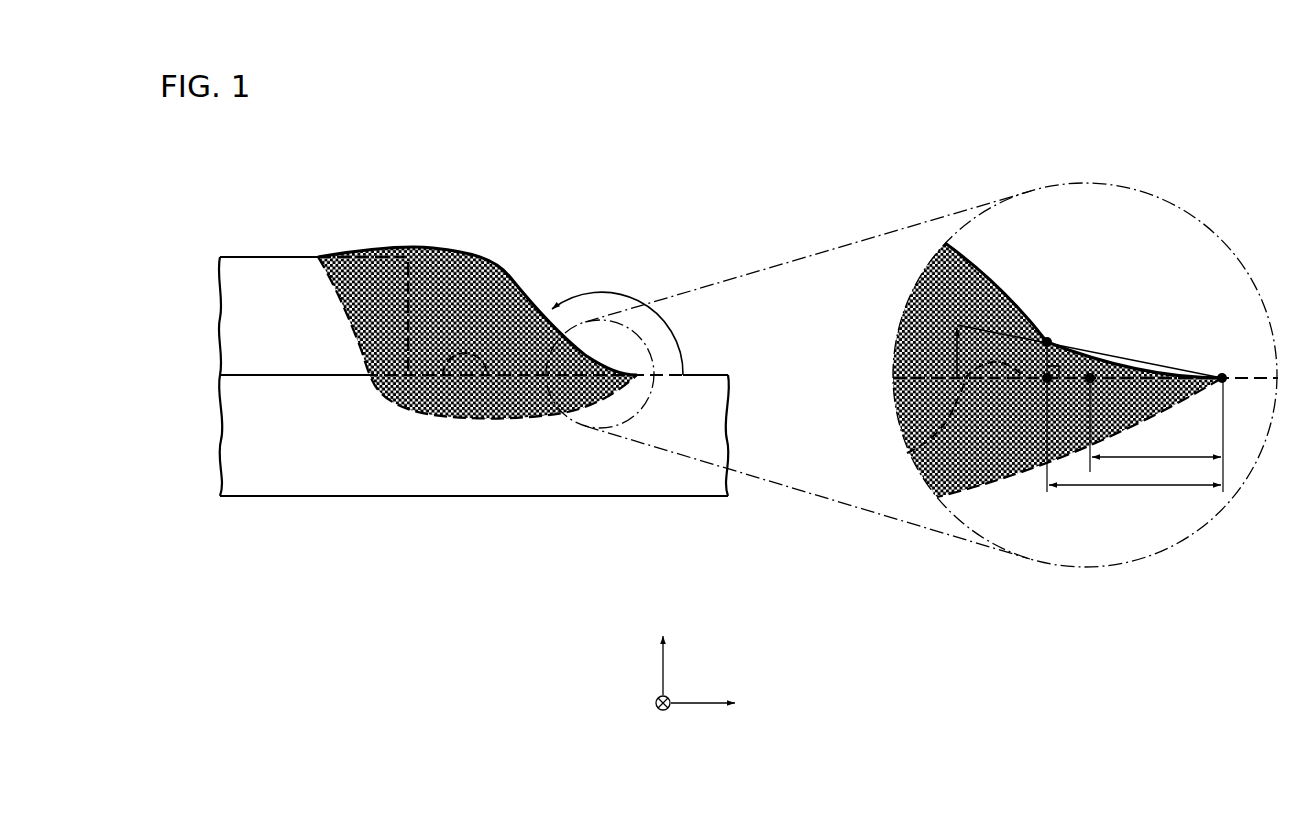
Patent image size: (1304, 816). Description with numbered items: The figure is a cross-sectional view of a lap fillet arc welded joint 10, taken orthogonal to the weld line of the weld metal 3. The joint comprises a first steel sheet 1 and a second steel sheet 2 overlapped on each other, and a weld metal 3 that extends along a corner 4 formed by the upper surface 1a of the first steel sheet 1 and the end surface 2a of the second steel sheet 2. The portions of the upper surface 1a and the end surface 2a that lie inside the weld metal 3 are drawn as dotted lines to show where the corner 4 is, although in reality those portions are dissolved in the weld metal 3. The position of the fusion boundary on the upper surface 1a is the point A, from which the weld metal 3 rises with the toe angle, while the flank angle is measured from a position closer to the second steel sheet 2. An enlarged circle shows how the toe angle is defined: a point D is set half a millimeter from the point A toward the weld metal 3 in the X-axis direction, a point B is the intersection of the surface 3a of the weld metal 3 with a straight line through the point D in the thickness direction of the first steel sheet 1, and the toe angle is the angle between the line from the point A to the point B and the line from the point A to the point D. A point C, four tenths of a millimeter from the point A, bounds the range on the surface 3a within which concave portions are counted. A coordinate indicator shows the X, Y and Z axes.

The first steel sheet 1 is at (270, 475).
The upper surface of the first steel sheet 1a is at (483, 378).
The second steel sheet 2 is at (270, 272).
The end surface of the second steel sheet 2a is at (405, 305).
The weld metal 3 is at (463, 272).
The surface of the weld metal 3a is at (507, 277).
The corner 4 is at (408, 375).
The lap fillet arc welded joint 10 is at (678, 225).
The point A is at (639, 374).
The point B is at (1050, 340).
The point C is at (1092, 376).
The point D is at (1044, 383).